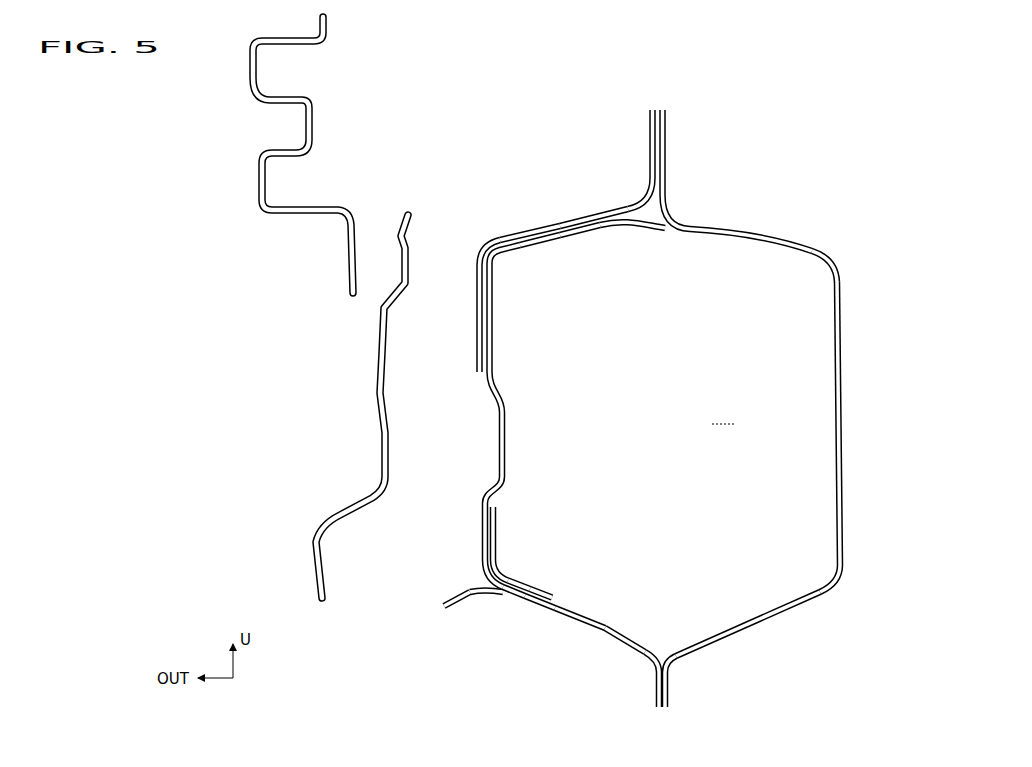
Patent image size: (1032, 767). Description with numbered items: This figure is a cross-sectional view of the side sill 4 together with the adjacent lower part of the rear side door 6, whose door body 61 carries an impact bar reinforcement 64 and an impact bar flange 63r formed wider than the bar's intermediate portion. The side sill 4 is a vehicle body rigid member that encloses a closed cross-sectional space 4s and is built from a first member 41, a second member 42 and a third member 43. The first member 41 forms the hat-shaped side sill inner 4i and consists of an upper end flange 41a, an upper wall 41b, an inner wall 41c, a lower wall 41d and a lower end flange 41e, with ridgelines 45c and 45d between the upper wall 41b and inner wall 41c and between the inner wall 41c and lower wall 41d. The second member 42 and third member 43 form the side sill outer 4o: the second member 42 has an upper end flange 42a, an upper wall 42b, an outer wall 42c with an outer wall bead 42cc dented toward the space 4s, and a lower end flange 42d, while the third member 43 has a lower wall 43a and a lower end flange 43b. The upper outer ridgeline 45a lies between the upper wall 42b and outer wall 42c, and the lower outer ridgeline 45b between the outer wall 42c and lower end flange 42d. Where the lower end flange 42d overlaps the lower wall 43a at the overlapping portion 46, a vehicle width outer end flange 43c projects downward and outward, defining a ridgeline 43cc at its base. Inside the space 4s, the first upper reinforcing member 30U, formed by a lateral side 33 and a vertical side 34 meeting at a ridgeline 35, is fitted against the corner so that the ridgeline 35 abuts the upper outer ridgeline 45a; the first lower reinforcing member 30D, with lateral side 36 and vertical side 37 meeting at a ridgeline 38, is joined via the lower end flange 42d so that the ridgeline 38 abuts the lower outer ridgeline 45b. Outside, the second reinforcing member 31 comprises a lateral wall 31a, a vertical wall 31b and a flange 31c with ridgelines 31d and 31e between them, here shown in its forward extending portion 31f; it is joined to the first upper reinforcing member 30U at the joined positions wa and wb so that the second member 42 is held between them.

The side sill 4 is at (532, 401).
The side sill inner 4i is at (862, 423).
The side sill outer 4o is at (490, 484).
The closed cross-sectional space 4s is at (723, 414).
The rear side door 6 is at (300, 307).
The first upper reinforcing member 30U is at (516, 259).
The first lower reinforcing member 30D is at (524, 586).
The second reinforcing member 31 is at (543, 234).
The lateral wall 31a is at (477, 322).
The vertical wall 31b is at (567, 223).
The flange 31c is at (650, 157).
The ridgeline 31d is at (478, 263).
The ridgeline 31e is at (636, 203).
The forward extending portion 31f is at (516, 235).
The lateral side 33 is at (538, 249).
The vertical side 34 is at (493, 325).
The ridgeline 35 is at (496, 258).
The lateral side 36 is at (548, 597).
The vertical side 37 is at (498, 527).
The ridgeline 38 is at (502, 571).
The first member 41 is at (790, 410).
The upper end flange 41a is at (666, 137).
The upper wall 41b is at (748, 230).
The inner wall 41c is at (841, 382).
The lower wall 41d is at (765, 618).
The lower end flange 41e is at (669, 690).
The second member 42 is at (638, 228).
The upper end flange 42a is at (649, 138).
The upper wall 42b is at (603, 239).
The outer wall 42c is at (481, 527).
The outer wall bead 42cc is at (505, 436).
The lower end flange 42d is at (509, 603).
The third member 43 is at (576, 624).
The lower wall 43a is at (598, 622).
The lower end flange 43b is at (657, 692).
The vehicle width outer end flange 43c is at (457, 595).
The ridgeline 43cc is at (479, 587).
The upper outer ridgeline 45a is at (481, 247).
The lower outer ridgeline 45b is at (481, 573).
The ridgeline 45c is at (839, 263).
The ridgeline 45d is at (843, 585).
The overlapping portion 46 is at (517, 612).
The door body 61 is at (346, 406).
The flange 63r is at (258, 187).
The impact bar reinforcement 64 is at (377, 401).
The joined position wa is at (476, 293).
The joined position wb is at (477, 365).